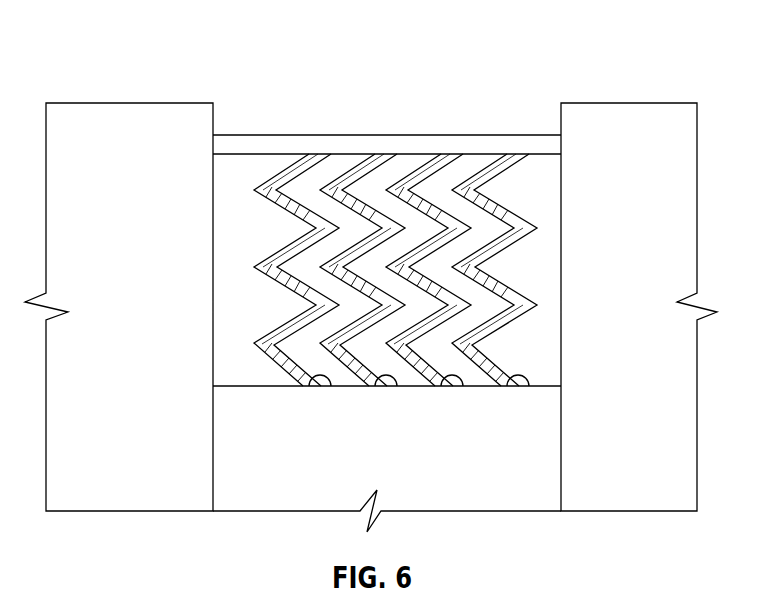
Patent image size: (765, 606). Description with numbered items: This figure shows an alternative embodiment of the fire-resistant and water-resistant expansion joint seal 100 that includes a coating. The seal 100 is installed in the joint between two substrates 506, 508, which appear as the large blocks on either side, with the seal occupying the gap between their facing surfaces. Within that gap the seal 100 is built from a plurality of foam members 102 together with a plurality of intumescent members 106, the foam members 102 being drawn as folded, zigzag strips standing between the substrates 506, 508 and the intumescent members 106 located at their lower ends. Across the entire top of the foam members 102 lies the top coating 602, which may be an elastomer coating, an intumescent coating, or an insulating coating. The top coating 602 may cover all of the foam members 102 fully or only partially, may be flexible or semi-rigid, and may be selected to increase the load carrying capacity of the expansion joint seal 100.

The fire-resistant and water-resistant expansion joint seal 100 is at (262, 45).
The foam member 102 is at (278, 378).
The intumescent member 106 is at (328, 388).
The substrate 506 is at (119, 260).
The substrate 508 is at (657, 260).
The top coating 602 is at (487, 143).